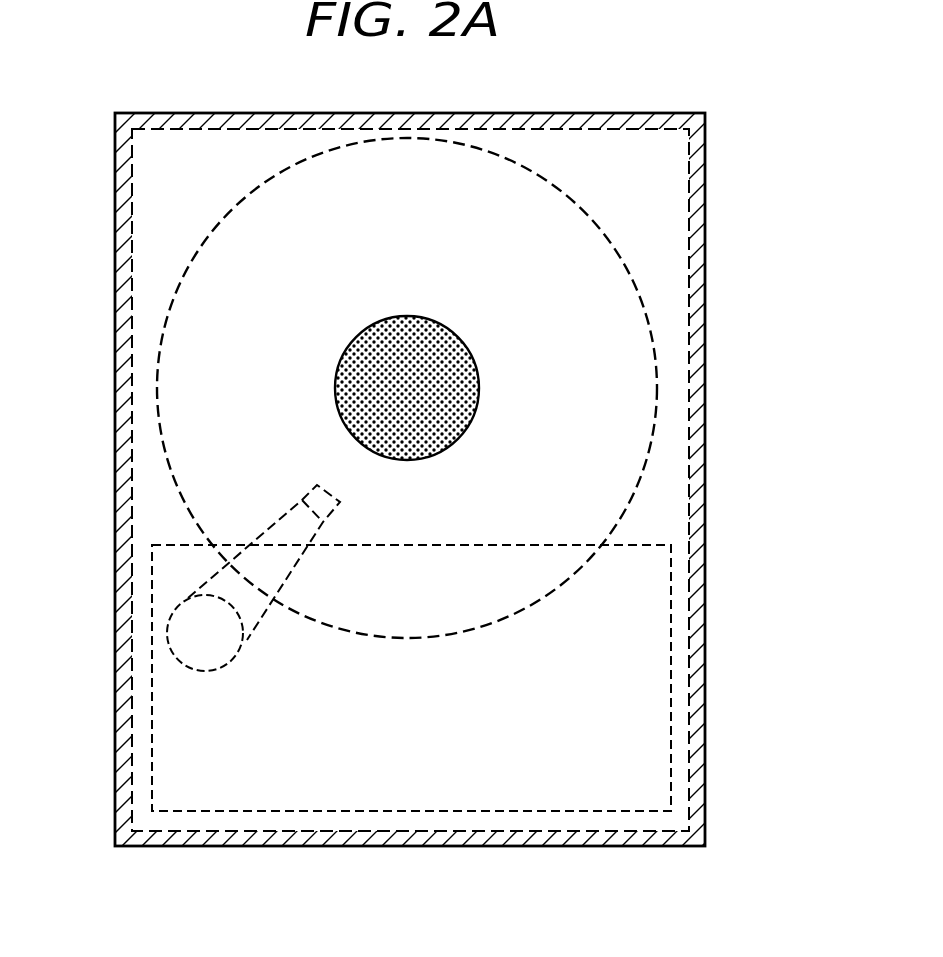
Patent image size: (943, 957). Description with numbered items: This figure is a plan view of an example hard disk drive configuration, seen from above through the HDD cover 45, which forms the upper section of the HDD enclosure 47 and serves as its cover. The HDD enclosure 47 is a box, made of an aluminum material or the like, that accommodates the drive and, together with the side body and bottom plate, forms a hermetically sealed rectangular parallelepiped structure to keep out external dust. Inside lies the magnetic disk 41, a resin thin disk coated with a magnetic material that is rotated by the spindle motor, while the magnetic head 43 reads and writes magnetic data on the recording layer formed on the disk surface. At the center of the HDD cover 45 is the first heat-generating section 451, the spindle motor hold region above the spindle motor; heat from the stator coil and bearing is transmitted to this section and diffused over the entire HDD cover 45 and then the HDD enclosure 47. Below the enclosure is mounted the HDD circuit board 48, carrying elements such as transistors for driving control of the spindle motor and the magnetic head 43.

The HDD cover 45 is at (655, 198).
The first heat-generating section 451 is at (417, 370).
The magnetic disk 41 is at (625, 413).
The HDD enclosure 47 is at (812, 506).
The HDD circuit board 48 is at (617, 687).
The magnetic head 43 is at (290, 530).